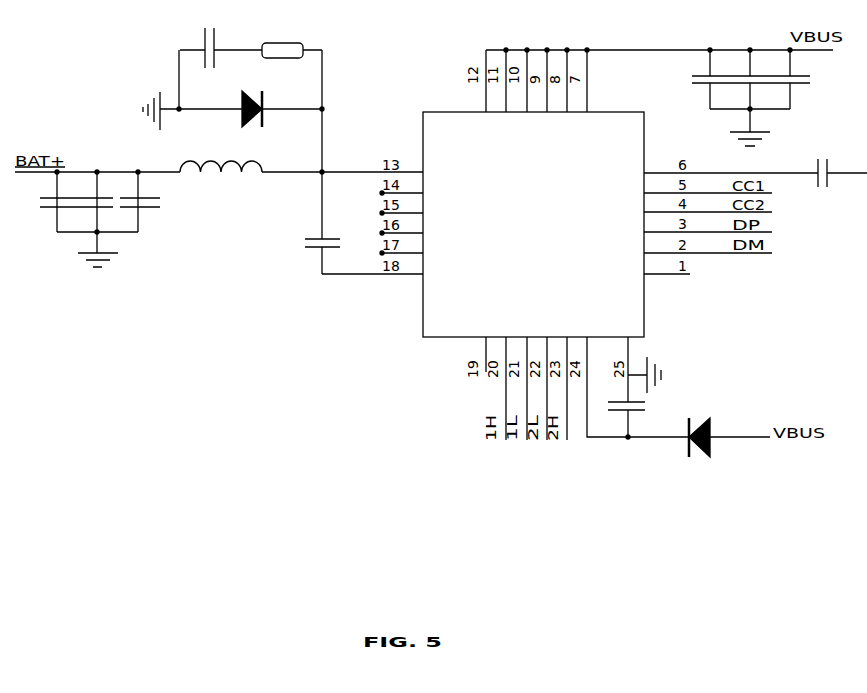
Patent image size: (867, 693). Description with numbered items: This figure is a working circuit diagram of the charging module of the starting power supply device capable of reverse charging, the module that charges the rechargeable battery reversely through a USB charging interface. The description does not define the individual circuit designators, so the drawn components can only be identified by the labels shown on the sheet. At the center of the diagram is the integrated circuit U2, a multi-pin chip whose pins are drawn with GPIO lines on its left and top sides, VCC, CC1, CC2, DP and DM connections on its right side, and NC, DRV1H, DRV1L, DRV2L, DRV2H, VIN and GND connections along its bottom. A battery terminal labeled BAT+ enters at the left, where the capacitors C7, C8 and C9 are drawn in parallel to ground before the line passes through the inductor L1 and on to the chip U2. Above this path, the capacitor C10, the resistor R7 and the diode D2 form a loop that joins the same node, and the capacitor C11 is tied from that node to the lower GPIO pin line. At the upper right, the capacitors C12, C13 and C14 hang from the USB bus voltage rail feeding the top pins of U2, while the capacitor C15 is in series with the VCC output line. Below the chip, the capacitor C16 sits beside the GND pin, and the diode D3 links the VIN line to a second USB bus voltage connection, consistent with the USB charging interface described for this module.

The capacitor C7 is at (64, 202).
The capacitor C8 is at (90, 182).
The capacitor C9 is at (150, 202).
The capacitor C10 is at (215, 41).
The capacitor C11 is at (300, 246).
The capacitor C12 is at (700, 56).
The capacitor C13 is at (750, 56).
The capacitor C14 is at (795, 67).
The capacitor C15 is at (823, 162).
The capacitor C16 is at (643, 408).
The diode D2 is at (240, 109).
The diode D3 is at (678, 449).
The inductor L1 is at (221, 159).
The resistor R7 is at (287, 36).
The integrated circuit chip U2 is at (546, 214).